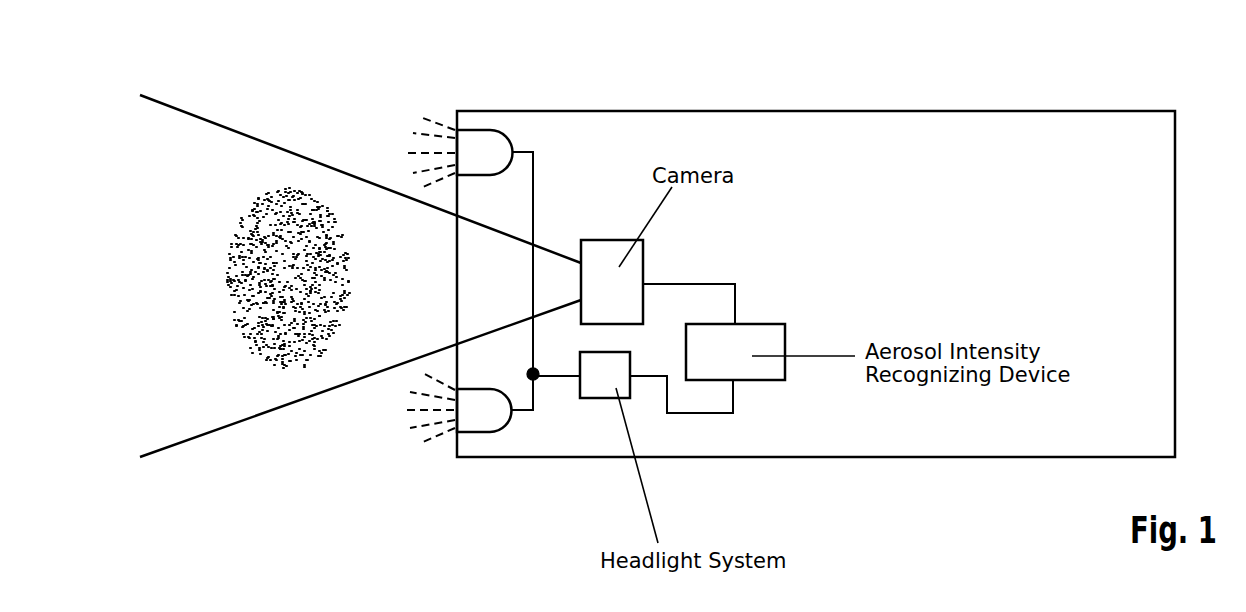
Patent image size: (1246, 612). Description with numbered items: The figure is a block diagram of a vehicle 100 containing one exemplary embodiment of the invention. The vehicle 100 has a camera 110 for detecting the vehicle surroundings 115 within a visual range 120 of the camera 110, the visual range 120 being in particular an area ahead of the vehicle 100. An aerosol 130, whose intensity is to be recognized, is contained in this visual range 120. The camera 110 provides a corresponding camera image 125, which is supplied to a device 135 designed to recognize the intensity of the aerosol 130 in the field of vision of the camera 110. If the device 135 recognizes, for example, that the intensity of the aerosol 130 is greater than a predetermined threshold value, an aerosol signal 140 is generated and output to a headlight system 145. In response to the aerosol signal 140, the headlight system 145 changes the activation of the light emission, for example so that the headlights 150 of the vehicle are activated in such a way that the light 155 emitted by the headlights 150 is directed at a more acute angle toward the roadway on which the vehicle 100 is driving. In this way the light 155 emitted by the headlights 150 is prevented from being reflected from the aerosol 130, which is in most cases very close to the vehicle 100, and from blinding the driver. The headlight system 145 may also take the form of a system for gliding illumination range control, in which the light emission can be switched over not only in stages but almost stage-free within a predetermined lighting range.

The vehicle 100 is at (815, 110).
The camera 110 is at (607, 240).
The vehicle surroundings 115 is at (382, 423).
The visual range 120 is at (275, 157).
The camera image 125 is at (686, 284).
The aerosol 130 is at (289, 363).
The device 135 is at (764, 324).
The aerosol signal 140 is at (700, 413).
The headlight system 145 is at (605, 400).
The headlights 150 is at (485, 130).
The light 155 is at (432, 120).